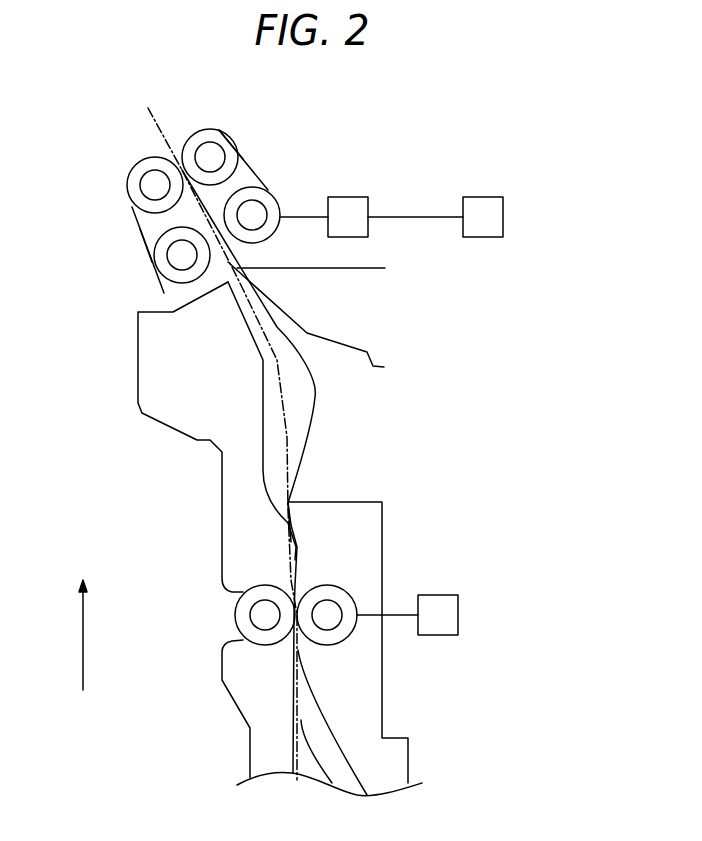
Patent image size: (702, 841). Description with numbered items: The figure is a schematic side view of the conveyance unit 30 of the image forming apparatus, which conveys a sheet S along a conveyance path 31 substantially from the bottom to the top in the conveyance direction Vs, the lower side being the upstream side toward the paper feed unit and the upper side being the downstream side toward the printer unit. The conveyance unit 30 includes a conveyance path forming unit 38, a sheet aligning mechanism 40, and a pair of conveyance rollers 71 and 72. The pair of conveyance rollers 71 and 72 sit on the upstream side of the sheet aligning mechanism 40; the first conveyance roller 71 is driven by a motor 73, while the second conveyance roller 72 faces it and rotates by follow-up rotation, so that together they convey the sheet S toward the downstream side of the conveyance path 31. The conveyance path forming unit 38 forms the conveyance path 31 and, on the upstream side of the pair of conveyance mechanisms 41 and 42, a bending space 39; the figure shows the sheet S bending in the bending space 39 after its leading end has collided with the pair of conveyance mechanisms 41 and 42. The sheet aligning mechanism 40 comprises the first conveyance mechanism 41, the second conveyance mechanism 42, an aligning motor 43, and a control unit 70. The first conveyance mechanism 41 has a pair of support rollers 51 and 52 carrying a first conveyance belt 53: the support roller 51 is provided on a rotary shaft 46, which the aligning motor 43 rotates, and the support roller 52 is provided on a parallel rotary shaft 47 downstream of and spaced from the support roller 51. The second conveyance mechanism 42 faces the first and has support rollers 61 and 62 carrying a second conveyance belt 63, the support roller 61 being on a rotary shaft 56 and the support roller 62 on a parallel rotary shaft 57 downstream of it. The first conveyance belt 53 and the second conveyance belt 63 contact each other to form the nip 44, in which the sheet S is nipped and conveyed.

The conveyance unit 30 is at (475, 159).
The conveyance path 31 is at (155, 124).
The conveyance path forming unit 38 is at (163, 436).
The bending space 39 is at (345, 362).
The sheet aligning mechanism 40 is at (233, 190).
The first conveyance mechanism 41 is at (268, 157).
The second conveyance mechanism 42 is at (125, 212).
The aligning motor 43 is at (355, 237).
The nip 44 is at (182, 162).
The rotary shaft 46 is at (262, 205).
The rotary shaft 47 is at (203, 142).
The support roller 51 is at (267, 232).
The support roller 52 is at (217, 131).
The first conveyance belt 53 is at (240, 152).
The rotary shaft 56 is at (167, 259).
The rotary shaft 57 is at (152, 172).
The support roller 61 is at (162, 275).
The support roller 62 is at (130, 180).
The second conveyance belt 63 is at (140, 232).
The control unit 70 is at (503, 217).
The first conveyance roller 71 is at (350, 595).
The second conveyance roller 72 is at (243, 585).
The motor 73 is at (455, 596).
The sheet S is at (315, 397).
The conveyance direction Vs is at (68, 635).